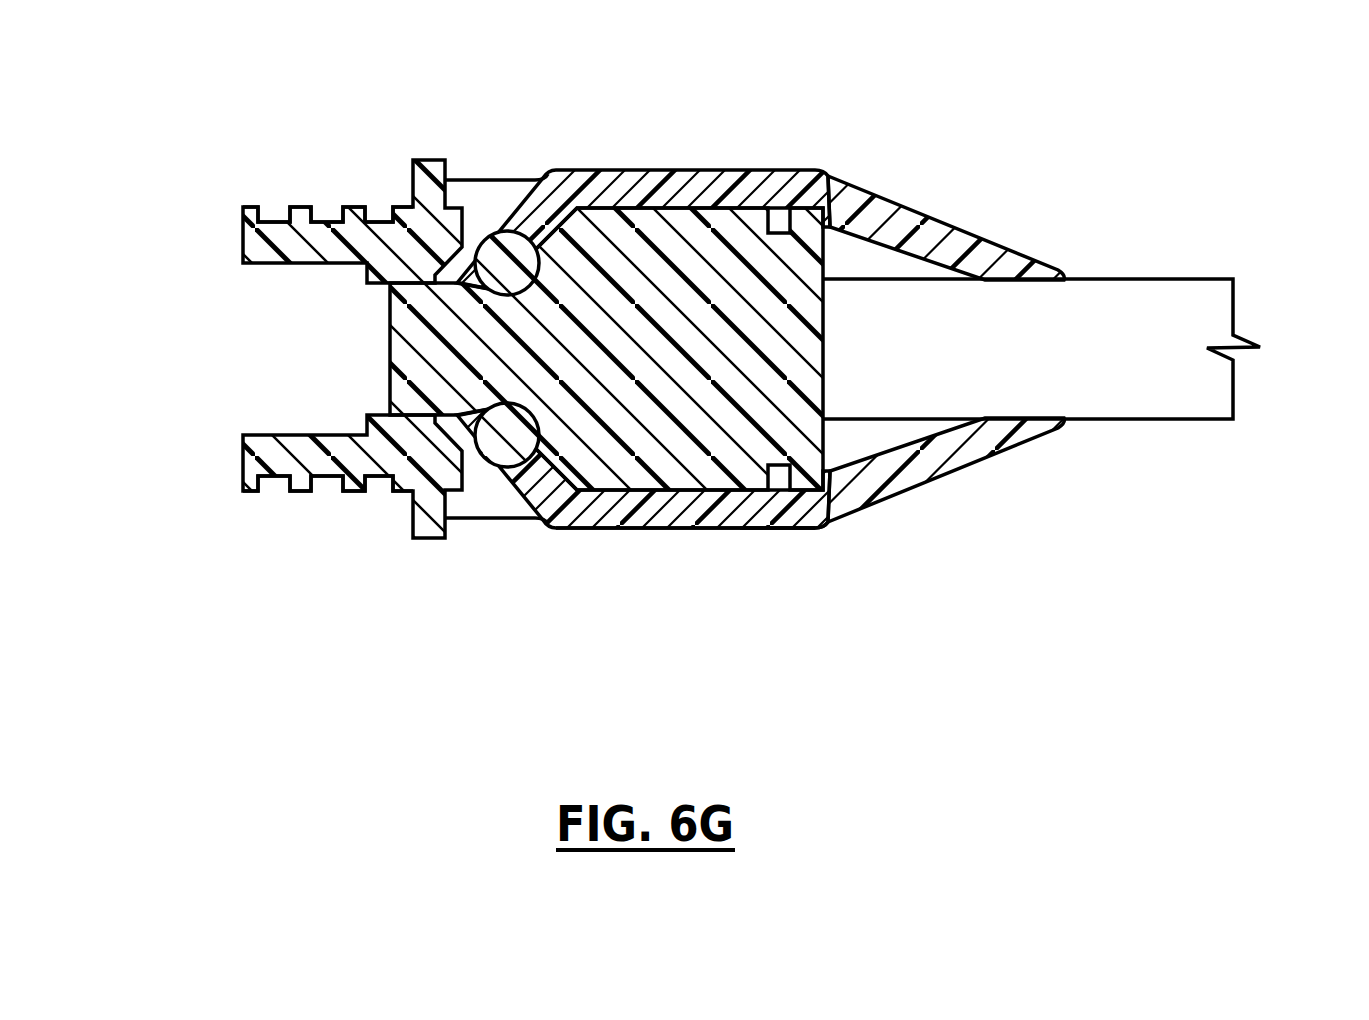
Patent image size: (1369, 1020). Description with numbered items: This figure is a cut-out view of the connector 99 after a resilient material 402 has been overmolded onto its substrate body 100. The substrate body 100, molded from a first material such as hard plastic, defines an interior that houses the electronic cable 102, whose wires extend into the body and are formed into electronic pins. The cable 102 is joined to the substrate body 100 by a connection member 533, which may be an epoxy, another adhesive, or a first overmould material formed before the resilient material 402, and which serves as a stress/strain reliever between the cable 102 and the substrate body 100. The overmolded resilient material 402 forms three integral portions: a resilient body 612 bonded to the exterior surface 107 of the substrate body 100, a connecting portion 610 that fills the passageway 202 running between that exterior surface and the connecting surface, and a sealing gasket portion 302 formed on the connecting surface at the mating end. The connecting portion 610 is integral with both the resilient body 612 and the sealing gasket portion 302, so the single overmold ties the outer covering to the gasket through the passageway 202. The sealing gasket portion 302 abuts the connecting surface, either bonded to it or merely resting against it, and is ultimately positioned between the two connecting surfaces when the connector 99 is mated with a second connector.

The connector 99 is at (182, 565).
The substrate body 100 is at (737, 240).
The electronic cable 102 is at (1174, 395).
The exterior surface 107 is at (763, 530).
The passageway 202 is at (387, 247).
The sealing gasket portion 302 is at (368, 272).
The resilient material 402 is at (687, 528).
The connection member 533 is at (867, 260).
The connecting portion 610 is at (440, 275).
The resilient body 612 is at (667, 172).